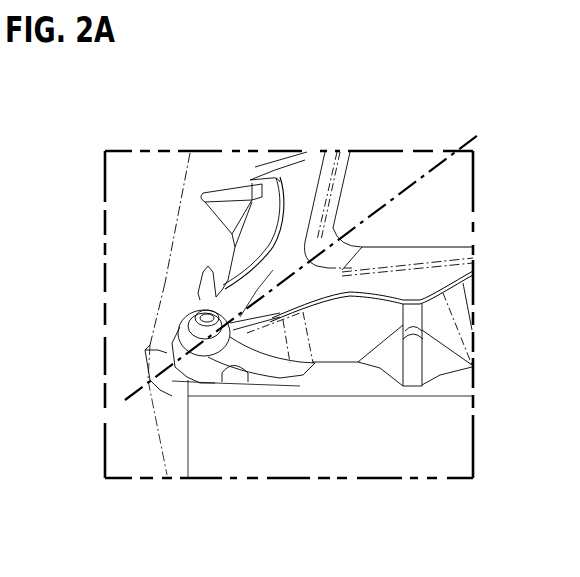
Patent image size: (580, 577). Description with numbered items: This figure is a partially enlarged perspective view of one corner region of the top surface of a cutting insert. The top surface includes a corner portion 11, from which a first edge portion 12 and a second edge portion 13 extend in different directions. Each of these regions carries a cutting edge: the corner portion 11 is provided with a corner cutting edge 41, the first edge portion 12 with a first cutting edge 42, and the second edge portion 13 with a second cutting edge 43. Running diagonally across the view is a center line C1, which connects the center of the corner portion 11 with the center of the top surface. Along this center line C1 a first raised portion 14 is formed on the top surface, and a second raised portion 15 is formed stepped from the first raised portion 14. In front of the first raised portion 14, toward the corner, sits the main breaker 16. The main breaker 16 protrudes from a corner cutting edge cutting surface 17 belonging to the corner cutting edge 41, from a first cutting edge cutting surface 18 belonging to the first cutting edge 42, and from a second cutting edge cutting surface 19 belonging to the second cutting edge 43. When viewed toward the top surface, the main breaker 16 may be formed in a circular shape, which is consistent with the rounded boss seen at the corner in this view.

The corner portion 11 is at (165, 380).
The first edge portion 12 is at (350, 398).
The second edge portion 13 is at (173, 237).
The first raised portion 14 is at (450, 273).
The second raised portion 15 is at (436, 204).
The main breaker 16 is at (200, 323).
The corner cutting edge cutting surface 17 is at (175, 383).
The first cutting edge cutting surface 18 is at (373, 396).
The second cutting edge cutting surface 19 is at (180, 275).
The corner cutting edge 41 is at (136, 374).
The first cutting edge 42 is at (424, 408).
The second cutting edge 43 is at (146, 302).
The center line C1 is at (312, 257).